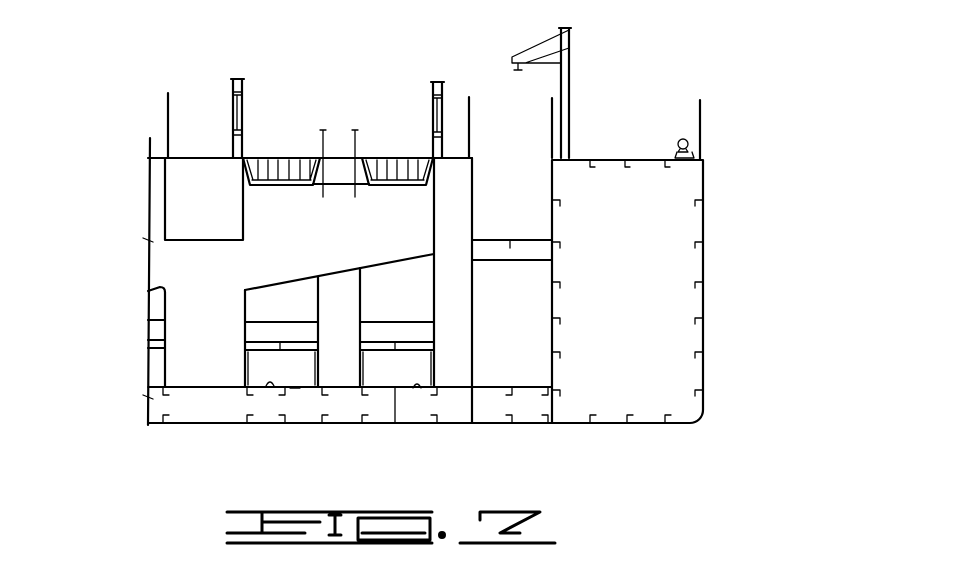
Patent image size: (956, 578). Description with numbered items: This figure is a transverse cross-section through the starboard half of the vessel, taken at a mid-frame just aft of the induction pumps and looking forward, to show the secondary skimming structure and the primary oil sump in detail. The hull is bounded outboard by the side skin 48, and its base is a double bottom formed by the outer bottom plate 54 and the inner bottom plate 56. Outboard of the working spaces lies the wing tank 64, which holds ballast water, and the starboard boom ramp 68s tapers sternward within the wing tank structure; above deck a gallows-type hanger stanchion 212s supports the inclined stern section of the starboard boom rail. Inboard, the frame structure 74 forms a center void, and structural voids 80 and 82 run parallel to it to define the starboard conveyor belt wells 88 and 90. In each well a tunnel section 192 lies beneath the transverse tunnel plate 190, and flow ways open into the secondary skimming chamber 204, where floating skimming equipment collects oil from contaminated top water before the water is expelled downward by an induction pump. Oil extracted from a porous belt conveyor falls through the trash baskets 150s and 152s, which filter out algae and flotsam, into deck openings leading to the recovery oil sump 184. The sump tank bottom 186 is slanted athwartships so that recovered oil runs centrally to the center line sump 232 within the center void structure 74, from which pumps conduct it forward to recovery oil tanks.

The side skin 48 is at (705, 221).
The wing tank 64 is at (640, 296).
The boom ramp 68s is at (530, 240).
The hanger stanchion 212s is at (562, 78).
The trash basket 152s is at (270, 158).
The trash basket 150s is at (385, 158).
The recovery oil sump 184 is at (340, 226).
The sump tank bottom 186 is at (305, 279).
The secondary skimming chamber 204 is at (300, 313).
The structural void 80 is at (348, 338).
The structural void 82 is at (462, 311).
The tunnel section 192 is at (300, 378).
The transverse tunnel plate 190 is at (258, 343).
The center line sump 232 is at (222, 344).
The frame structure 74 is at (168, 358).
The conveyor belt well 90 is at (270, 386).
The inner bottom plate 56 is at (295, 390).
The outer bottom plate 54 is at (336, 423).
The conveyor belt well 88 is at (417, 388).